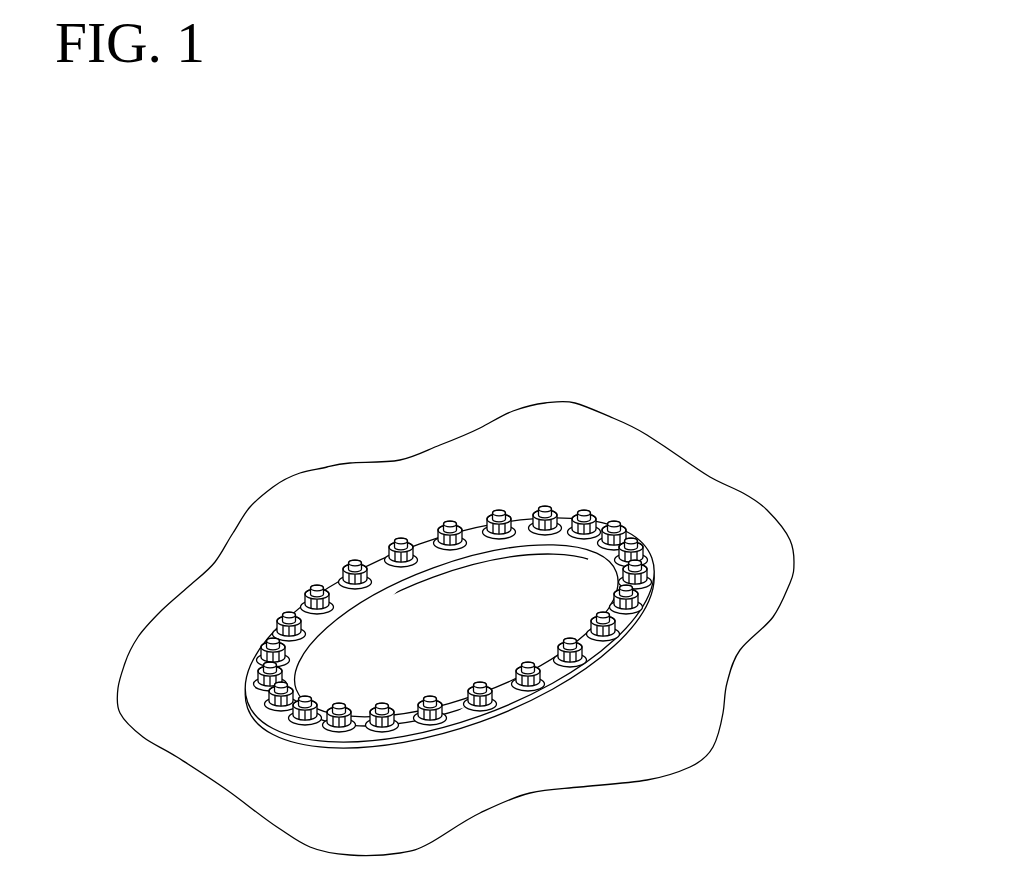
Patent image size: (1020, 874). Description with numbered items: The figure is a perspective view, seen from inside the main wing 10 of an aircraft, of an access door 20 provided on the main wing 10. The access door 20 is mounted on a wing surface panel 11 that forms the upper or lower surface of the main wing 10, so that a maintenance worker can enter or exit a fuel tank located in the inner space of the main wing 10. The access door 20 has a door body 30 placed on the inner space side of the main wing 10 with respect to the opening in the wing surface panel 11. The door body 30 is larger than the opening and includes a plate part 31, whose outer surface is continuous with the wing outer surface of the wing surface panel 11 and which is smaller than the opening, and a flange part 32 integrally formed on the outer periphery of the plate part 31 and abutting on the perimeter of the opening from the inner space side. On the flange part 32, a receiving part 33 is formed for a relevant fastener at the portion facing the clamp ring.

The main wing 10 is at (458, 628).
The wing surface panel 11 is at (748, 514).
The access door 20 is at (449, 618).
The door body 30 is at (484, 608).
The plate part 31 is at (457, 612).
The flange part 32 is at (597, 651).
The receiving part 33 is at (340, 583).